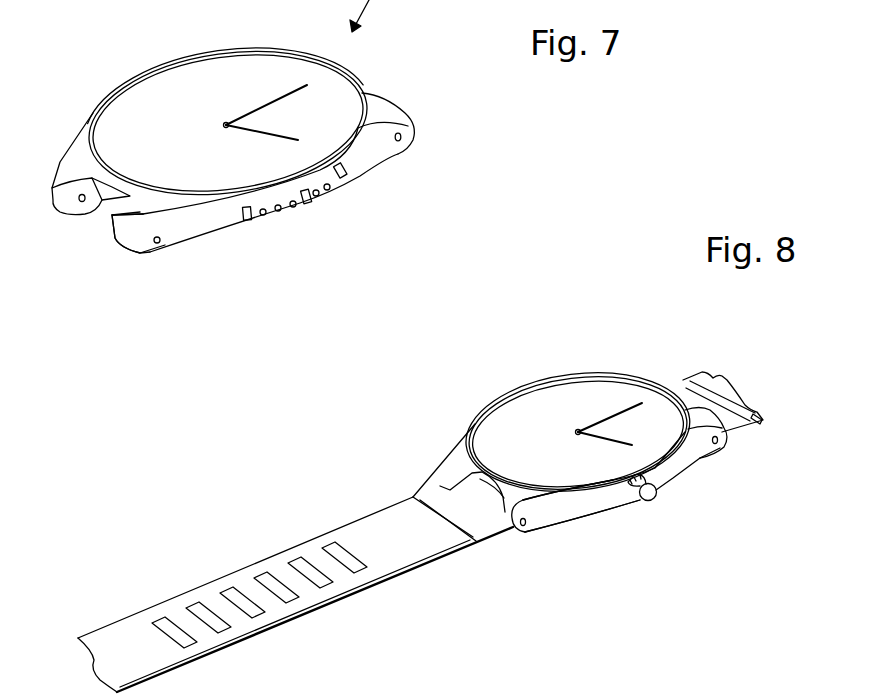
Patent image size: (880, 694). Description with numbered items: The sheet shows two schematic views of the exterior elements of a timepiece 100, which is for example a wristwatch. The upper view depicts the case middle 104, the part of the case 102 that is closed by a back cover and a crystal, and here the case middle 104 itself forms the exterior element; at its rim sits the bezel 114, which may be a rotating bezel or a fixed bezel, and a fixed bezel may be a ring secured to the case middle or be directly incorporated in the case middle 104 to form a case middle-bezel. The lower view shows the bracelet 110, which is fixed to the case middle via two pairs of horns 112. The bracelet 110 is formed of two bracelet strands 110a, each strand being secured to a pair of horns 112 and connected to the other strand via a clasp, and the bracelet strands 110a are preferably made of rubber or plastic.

In FIG. 8, the timepiece 100 is at (578, 336).
In FIG. 8, the case 102 is at (680, 386).
In FIG. 7, the case middle 104 is at (374, 183).
In FIG. 8, the bracelet 110 is at (372, 503).
In FIG. 8, the bracelet strands 110a is at (218, 636).
In FIG. 7, the horns 112 is at (178, 240).
In FIG. 8, the horns 112 is at (540, 520).
In FIG. 7, the bezel 114 is at (172, 63).